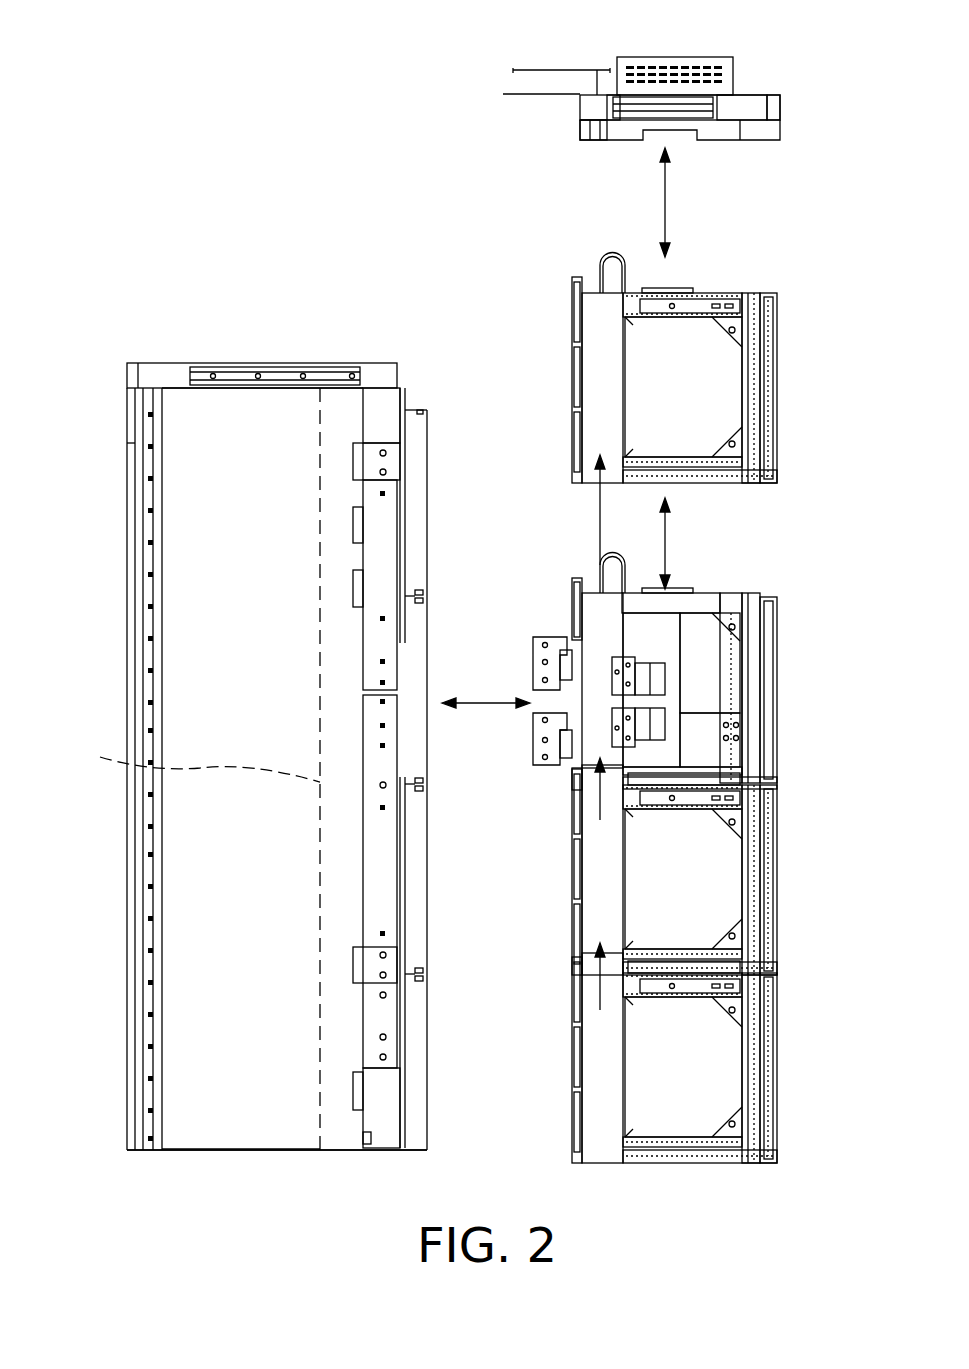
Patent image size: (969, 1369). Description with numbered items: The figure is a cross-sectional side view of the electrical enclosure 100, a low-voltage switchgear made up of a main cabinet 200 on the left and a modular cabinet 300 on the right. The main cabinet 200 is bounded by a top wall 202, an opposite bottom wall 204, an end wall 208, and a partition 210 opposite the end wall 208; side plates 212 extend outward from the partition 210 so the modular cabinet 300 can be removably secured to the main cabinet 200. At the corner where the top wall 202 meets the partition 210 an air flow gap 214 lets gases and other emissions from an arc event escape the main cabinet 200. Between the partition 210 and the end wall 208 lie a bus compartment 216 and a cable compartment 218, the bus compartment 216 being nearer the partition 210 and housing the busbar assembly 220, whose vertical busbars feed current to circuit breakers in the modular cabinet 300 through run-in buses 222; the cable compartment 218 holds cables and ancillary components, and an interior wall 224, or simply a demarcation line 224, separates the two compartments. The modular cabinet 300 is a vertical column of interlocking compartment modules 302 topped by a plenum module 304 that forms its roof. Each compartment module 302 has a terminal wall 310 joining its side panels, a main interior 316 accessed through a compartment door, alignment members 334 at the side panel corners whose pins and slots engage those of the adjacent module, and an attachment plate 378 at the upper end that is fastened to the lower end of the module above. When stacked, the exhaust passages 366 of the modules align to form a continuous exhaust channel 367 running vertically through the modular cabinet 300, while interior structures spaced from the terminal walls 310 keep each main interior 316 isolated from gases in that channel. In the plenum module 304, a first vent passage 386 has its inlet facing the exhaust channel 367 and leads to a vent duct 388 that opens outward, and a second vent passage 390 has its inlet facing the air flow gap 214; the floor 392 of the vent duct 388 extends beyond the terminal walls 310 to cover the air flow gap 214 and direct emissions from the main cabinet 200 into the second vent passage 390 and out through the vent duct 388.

The electrical enclosure 100 is at (147, 258).
The main cabinet 200 is at (102, 522).
The top wall 202 is at (258, 365).
The bottom wall 204 is at (270, 1152).
The end wall 208 is at (127, 848).
The partition 210 is at (403, 415).
The side plates 212 is at (415, 1135).
The air flow gap 214 is at (378, 362).
The bus compartment 216 is at (342, 668).
The cable compartment 218 is at (241, 829).
The busbar assembly 220 is at (378, 530).
The run-in buses 222 is at (533, 660).
The interior wall 224 is at (187, 756).
The modular cabinet 300 is at (820, 105).
The compartment modules 302 is at (808, 382).
The plenum module 304 is at (750, 78).
The terminal wall 310 is at (578, 310).
The main interior 316 is at (683, 727).
The alignment members 334 is at (770, 290).
The exhaust passages 366 is at (608, 368).
The continuous exhaust channel 367 is at (598, 545).
The attachment plate 378 is at (683, 288).
The first vent passage 386 is at (593, 145).
The vent duct 388 is at (548, 62).
The second vent passage 390 is at (586, 108).
The floor 392 is at (518, 97).